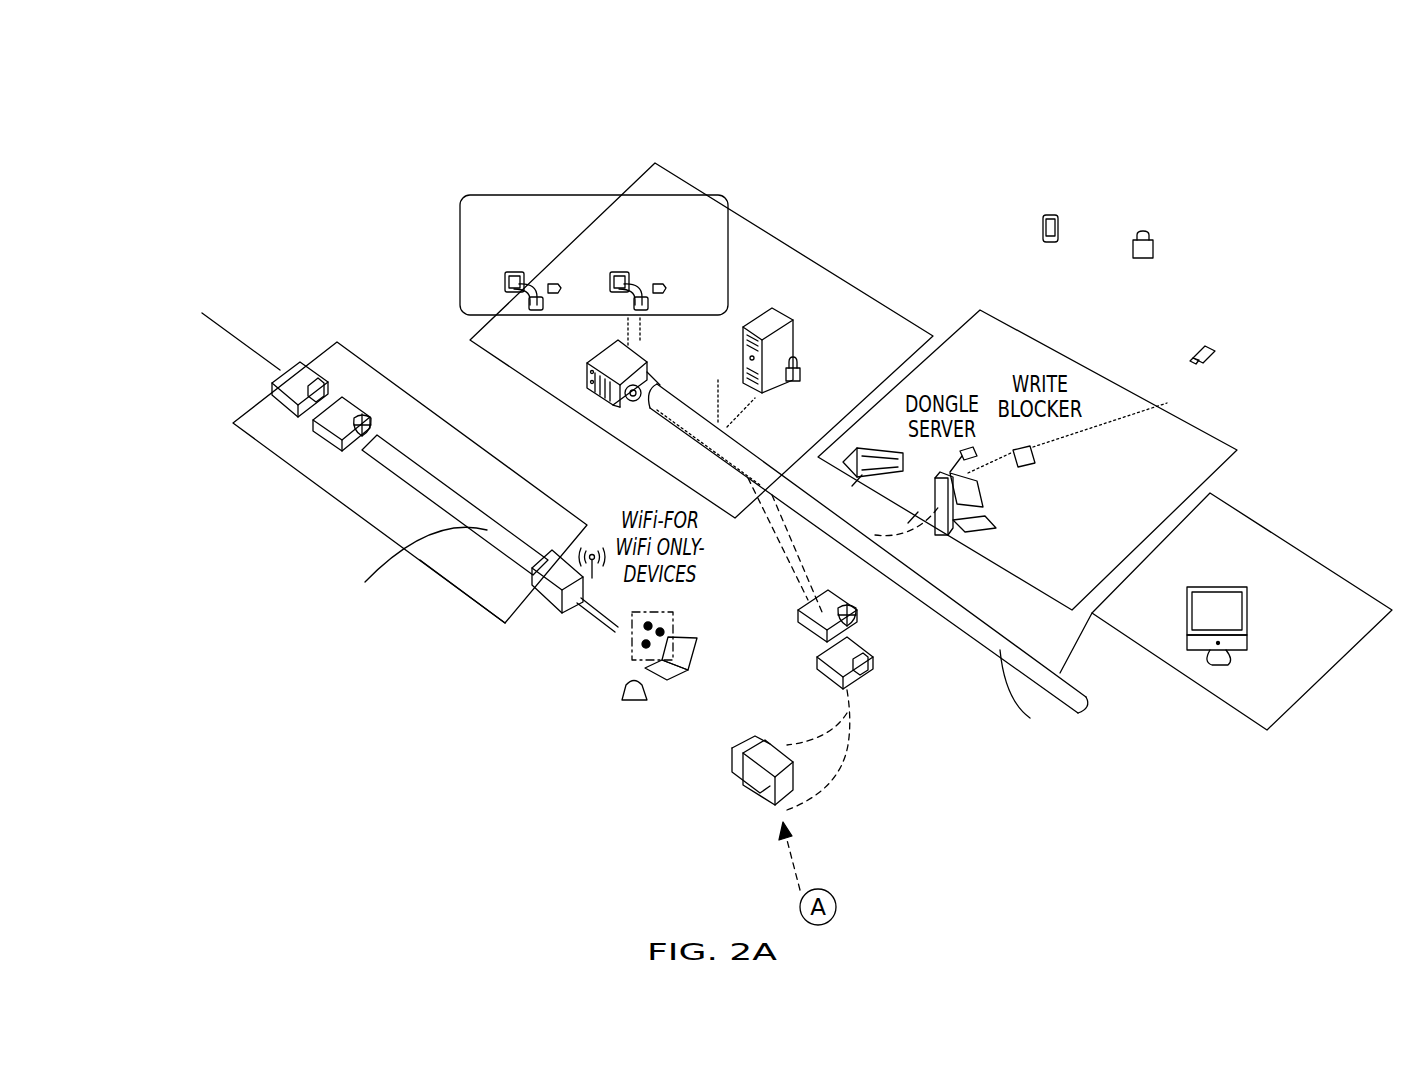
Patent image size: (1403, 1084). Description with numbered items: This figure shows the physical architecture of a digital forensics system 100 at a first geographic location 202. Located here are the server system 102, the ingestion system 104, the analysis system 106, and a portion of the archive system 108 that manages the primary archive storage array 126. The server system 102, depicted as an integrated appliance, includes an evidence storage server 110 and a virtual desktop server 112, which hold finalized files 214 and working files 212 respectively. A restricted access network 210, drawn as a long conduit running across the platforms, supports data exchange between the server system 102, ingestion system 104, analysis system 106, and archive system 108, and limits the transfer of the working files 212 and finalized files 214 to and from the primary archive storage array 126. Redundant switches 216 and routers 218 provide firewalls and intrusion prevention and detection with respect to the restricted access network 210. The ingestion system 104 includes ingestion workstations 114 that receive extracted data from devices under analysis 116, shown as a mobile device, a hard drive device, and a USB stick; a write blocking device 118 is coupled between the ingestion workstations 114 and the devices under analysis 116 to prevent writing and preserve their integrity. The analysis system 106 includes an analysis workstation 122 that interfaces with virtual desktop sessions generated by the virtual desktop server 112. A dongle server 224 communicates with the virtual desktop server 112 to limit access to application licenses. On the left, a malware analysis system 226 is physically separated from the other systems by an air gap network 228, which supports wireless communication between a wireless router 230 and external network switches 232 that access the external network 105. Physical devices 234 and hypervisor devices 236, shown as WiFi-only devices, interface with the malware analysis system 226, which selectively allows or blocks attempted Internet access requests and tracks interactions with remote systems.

The digital forensics system 100 is at (778, 128).
The server system 102 is at (587, 363).
The ingestion system 104 is at (1097, 373).
The external network 105 is at (217, 320).
The analysis system 106 is at (1263, 522).
The archive system 108 is at (779, 300).
The evidence storage server 110 is at (617, 275).
The virtual desktop server 112 is at (510, 275).
The ingestion workstations 114 is at (962, 540).
The devices under analysis 116 is at (1050, 215).
The write blocking device 118 is at (1040, 455).
The analysis workstations 122 is at (1222, 590).
The primary archive storage array 126 is at (800, 383).
The first geographic location 202 is at (986, 218).
The restricted access network 210 is at (1088, 703).
The working files 212 is at (553, 283).
The finalized files 214 is at (661, 283).
The redundant switches 216 is at (860, 617).
The routers 218 is at (745, 745).
The dongle server 224 is at (843, 460).
The malware analysis system 226 is at (505, 625).
The air gap network 228 is at (430, 470).
The wireless router 230 is at (552, 612).
The external network switches 232 is at (300, 362).
The physical devices 234 is at (627, 762).
The hypervisor devices 236 is at (672, 678).